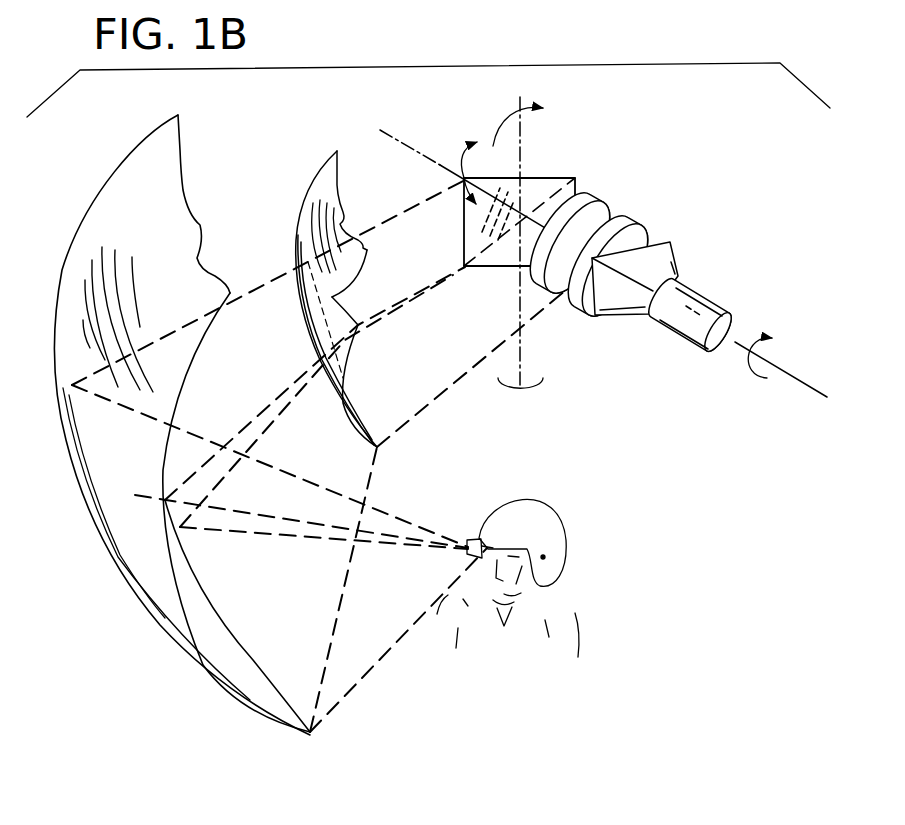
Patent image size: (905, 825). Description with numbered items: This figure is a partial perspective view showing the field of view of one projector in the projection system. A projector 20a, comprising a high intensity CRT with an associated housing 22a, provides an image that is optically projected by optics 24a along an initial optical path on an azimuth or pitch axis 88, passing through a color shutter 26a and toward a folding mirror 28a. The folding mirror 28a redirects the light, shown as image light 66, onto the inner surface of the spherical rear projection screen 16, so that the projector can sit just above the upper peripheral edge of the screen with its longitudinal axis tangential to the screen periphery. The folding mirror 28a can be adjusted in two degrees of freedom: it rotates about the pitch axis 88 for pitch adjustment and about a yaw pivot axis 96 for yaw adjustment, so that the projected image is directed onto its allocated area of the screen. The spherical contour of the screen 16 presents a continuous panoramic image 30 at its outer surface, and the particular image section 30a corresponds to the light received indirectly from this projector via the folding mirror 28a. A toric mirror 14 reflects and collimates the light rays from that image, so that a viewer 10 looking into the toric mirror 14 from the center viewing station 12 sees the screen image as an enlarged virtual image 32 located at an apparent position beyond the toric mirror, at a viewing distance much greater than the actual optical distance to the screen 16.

The viewer 10 is at (567, 598).
The center viewing station 12 is at (471, 535).
The toric mirror 14 is at (173, 677).
The spherical rear projection screen 16 is at (285, 231).
The projector 20a is at (590, 215).
The light source housing 22a is at (694, 272).
The optics 24a is at (632, 215).
The color shutter 26a is at (597, 193).
The folding mirror 28a is at (540, 172).
The panoramic image 30 is at (298, 347).
The image section 30a is at (322, 374).
The enlarged virtual image 32 is at (98, 558).
The image light 66 is at (383, 232).
The azimuth axis (pitch axis) 88 is at (807, 378).
The yaw pivot axis 96 is at (521, 338).